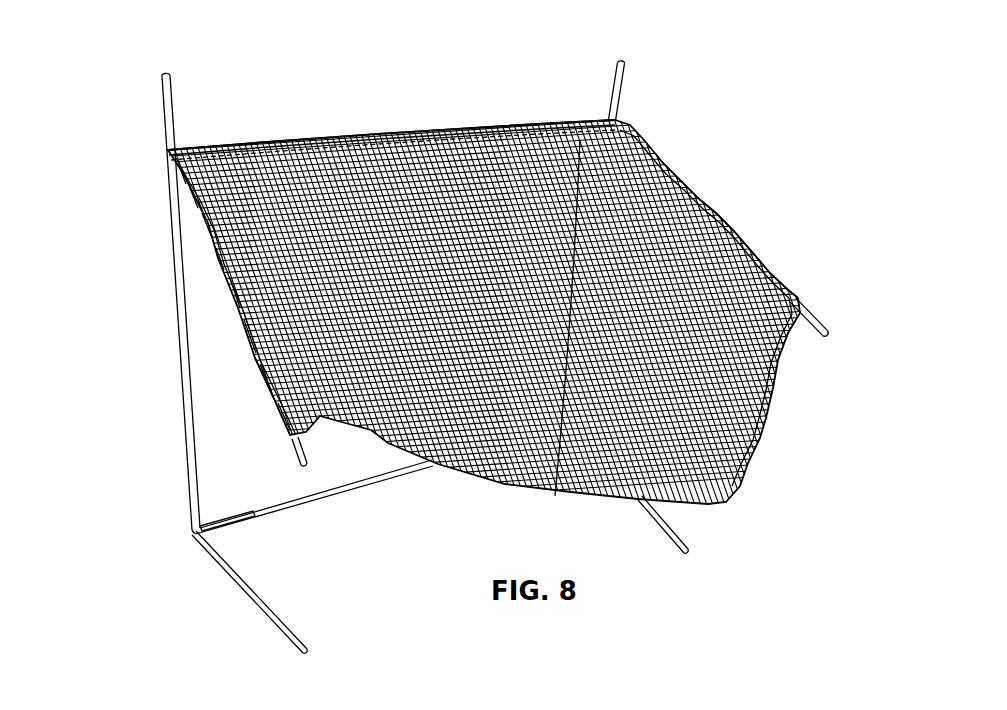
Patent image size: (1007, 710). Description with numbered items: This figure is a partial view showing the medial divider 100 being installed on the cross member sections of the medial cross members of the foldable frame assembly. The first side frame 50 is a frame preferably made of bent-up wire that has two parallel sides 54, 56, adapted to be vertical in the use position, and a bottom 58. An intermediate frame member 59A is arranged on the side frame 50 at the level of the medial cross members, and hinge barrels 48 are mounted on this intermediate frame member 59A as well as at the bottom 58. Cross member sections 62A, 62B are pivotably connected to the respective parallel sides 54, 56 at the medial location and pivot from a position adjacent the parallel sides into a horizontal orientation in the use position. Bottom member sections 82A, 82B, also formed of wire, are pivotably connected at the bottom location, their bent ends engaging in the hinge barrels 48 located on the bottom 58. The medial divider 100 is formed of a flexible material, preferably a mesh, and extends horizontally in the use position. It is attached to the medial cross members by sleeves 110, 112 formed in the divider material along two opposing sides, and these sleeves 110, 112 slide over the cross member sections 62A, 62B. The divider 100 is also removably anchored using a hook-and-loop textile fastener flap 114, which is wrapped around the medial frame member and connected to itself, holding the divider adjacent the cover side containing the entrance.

The hinge barrel 48 is at (160, 150).
The first side frame 50 is at (170, 111).
The parallel side 54 is at (616, 82).
The parallel side 56 is at (170, 282).
The bottom 58 is at (364, 473).
The intermediate frame member 59A is at (263, 137).
The cross member section 62A is at (793, 307).
The cross member section 62B is at (294, 460).
The bottom member section 82A is at (677, 538).
The bottom member section 82B is at (230, 577).
The medial divider 100 is at (637, 193).
The sleeve 110 is at (747, 250).
The sleeve 112 is at (265, 409).
The hook-and-loop textile fastener flap 114 is at (425, 122).